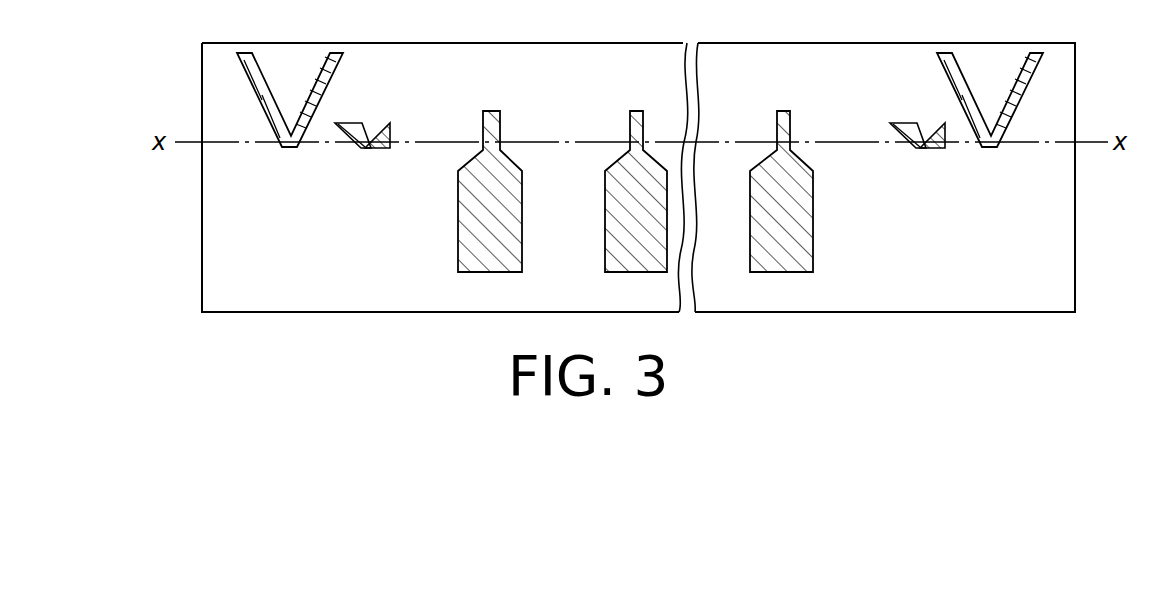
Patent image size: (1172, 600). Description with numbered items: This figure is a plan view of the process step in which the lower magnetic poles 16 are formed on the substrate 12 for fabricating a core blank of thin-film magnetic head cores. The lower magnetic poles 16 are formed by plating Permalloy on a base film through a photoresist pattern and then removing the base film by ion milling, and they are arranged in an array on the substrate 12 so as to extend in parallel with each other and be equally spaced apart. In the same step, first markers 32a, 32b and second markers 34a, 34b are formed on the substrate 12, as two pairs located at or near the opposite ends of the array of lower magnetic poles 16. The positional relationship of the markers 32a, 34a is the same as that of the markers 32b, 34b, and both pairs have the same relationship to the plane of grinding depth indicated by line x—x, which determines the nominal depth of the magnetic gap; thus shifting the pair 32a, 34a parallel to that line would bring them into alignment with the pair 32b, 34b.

The substrate 12 is at (190, 284).
The lower magnetic poles 16 is at (473, 250).
The first marker 32a is at (246, 89).
The first marker 32b is at (1035, 96).
The second marker 34a is at (367, 156).
The second marker 34b is at (926, 156).